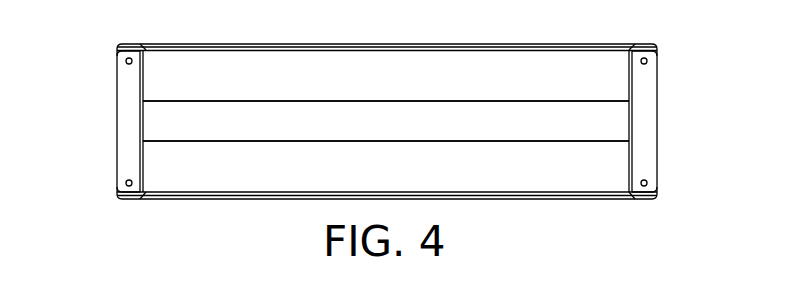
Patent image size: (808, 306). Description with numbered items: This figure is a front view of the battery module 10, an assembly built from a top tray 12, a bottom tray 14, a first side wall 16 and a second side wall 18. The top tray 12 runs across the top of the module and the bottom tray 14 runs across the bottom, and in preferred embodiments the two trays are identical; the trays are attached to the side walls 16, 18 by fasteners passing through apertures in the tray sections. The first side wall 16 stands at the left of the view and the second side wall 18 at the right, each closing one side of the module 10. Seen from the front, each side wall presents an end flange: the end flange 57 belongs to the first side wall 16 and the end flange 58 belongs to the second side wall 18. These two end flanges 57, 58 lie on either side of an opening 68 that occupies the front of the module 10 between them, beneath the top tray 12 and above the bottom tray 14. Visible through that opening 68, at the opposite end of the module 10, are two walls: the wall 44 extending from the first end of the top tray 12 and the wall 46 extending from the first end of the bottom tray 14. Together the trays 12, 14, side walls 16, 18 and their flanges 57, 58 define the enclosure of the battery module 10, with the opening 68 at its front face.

The battery module 10 is at (666, 27).
The top tray 12 is at (548, 44).
The bottom tray 14 is at (518, 200).
The first side wall 16 is at (117, 112).
The second side wall 18 is at (657, 108).
The wall 44 is at (390, 85).
The wall 46 is at (386, 176).
The end flange 57 is at (128, 160).
The end flange 58 is at (648, 133).
The opening 68 is at (242, 127).